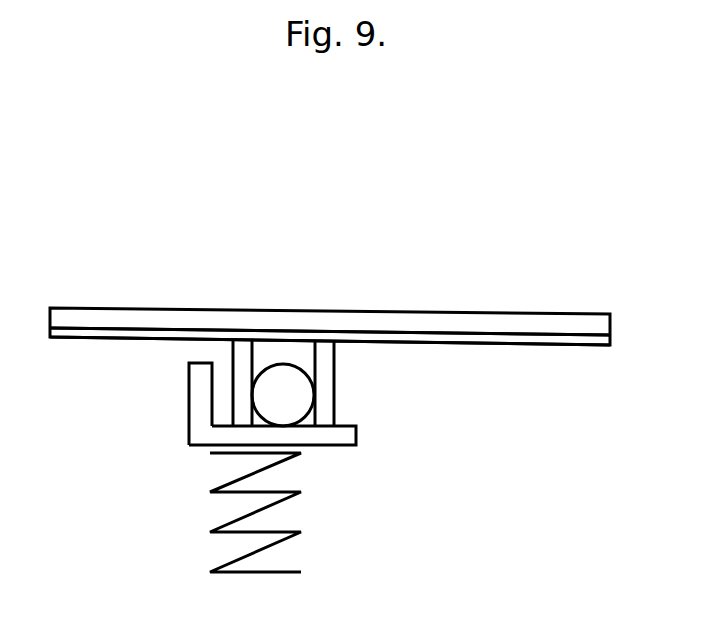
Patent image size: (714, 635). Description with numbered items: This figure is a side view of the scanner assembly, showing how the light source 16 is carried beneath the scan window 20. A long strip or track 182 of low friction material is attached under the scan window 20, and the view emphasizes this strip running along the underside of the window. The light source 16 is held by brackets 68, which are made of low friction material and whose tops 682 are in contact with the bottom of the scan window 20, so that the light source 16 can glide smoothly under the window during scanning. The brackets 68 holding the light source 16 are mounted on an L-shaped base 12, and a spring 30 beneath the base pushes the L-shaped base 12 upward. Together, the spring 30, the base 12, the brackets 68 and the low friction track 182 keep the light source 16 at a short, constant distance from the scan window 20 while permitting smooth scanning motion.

The scan window 20 is at (533, 314).
The track 182 is at (552, 342).
The bracket 68 is at (326, 408).
The top of bracket 682 is at (278, 350).
The light source 16 is at (272, 391).
The L-shaped base 12 is at (191, 441).
The spring 30 is at (307, 544).